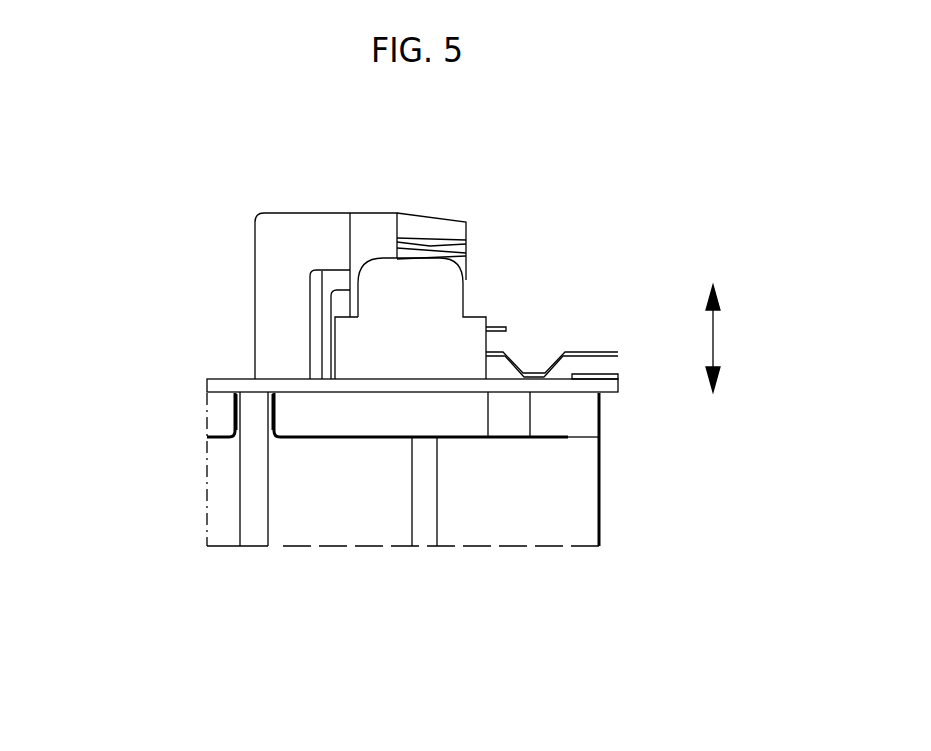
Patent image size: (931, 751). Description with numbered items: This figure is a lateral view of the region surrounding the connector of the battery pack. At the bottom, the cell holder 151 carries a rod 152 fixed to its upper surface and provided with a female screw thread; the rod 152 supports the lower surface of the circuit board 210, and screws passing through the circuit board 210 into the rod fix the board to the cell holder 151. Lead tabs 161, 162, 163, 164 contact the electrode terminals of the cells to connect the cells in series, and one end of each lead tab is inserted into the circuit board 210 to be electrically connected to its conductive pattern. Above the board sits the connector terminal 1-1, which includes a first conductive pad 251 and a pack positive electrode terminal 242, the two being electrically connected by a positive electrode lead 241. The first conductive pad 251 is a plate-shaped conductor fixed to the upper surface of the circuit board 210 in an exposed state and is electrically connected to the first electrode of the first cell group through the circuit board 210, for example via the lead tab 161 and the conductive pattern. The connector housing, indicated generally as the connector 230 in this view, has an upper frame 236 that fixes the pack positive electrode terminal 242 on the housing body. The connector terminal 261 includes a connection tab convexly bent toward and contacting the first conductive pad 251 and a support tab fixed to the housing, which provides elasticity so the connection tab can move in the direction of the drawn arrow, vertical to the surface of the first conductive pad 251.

The circuit board 210 is at (608, 385).
The lead tab 161 is at (600, 425).
The lead tab 164 is at (233, 422).
The lead tab 163 is at (258, 520).
The lead tab 162 is at (275, 413).
The cell holder 151 is at (512, 525).
The rod 152 is at (528, 415).
The positive electrode lead 241 is at (293, 213).
The upper frame 236 is at (368, 223).
The dome member 230 is at (488, 256).
The pack positive electrode terminal 242 is at (447, 220).
The first conductive pad 251 is at (572, 376).
The connector terminal 261 is at (563, 353).
The connector terminal 1-1 is at (690, 160).